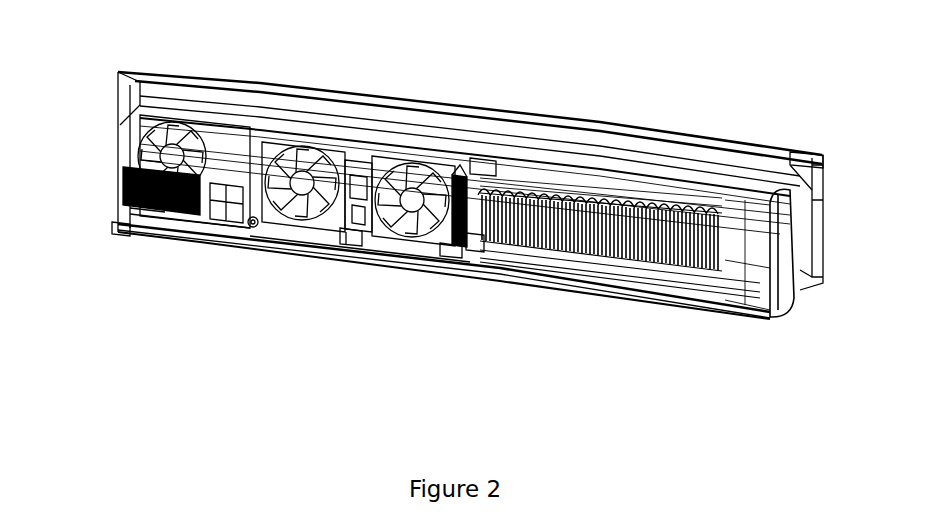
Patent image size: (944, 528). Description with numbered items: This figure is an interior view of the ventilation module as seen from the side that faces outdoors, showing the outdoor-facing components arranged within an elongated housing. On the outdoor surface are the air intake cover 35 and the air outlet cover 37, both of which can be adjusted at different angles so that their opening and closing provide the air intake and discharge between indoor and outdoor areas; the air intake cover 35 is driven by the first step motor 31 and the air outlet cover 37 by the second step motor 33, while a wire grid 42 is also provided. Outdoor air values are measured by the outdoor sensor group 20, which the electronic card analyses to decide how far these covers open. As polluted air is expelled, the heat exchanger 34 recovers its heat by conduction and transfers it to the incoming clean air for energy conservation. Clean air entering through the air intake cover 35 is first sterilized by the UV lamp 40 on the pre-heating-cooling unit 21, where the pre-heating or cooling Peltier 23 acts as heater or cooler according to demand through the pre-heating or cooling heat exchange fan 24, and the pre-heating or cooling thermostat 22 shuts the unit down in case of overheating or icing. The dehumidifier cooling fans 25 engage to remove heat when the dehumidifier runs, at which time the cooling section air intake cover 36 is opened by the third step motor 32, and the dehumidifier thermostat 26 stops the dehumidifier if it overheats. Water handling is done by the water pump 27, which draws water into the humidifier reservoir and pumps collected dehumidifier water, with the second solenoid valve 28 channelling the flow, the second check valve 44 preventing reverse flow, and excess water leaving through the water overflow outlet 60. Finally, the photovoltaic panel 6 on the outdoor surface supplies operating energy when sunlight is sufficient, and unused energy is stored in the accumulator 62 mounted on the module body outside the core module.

The photovoltaic panel 6 is at (720, 190).
The outdoor sensor group 20 is at (725, 316).
The pre-heating-cooling unit 21 is at (585, 262).
The pre-heating or cooling thermostat 22 is at (474, 240).
The pre-heating or cooling Peltier 23 is at (490, 165).
The pre-heating or cooling heat exchange fan 24 is at (450, 250).
The dehumidifier cooling fans 25 is at (303, 178).
The dehumidifier thermostat 26 is at (471, 170).
The water pump 27 is at (366, 158).
The second solenoid valve 28 is at (348, 242).
The first step motor 31 is at (788, 315).
The third step motor 32 is at (152, 210).
The second step motor 33 is at (237, 197).
The heat exchanger 34 is at (123, 182).
The air intake cover 35 is at (644, 272).
The cooling section air intake cover 36 is at (403, 245).
The air outlet cover 37 is at (114, 229).
The UV lamp 40 is at (662, 188).
The wire grid 42 is at (288, 248).
The second check valve 44 is at (250, 148).
The water overflow outlet 60 is at (250, 216).
The accumulator 62 is at (793, 185).